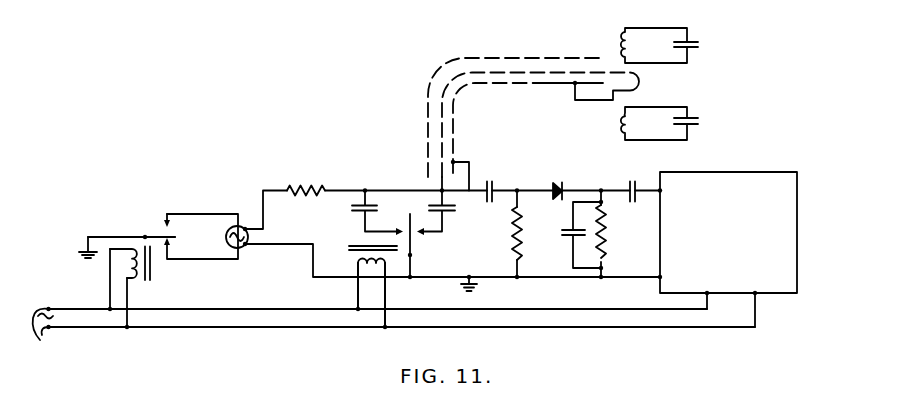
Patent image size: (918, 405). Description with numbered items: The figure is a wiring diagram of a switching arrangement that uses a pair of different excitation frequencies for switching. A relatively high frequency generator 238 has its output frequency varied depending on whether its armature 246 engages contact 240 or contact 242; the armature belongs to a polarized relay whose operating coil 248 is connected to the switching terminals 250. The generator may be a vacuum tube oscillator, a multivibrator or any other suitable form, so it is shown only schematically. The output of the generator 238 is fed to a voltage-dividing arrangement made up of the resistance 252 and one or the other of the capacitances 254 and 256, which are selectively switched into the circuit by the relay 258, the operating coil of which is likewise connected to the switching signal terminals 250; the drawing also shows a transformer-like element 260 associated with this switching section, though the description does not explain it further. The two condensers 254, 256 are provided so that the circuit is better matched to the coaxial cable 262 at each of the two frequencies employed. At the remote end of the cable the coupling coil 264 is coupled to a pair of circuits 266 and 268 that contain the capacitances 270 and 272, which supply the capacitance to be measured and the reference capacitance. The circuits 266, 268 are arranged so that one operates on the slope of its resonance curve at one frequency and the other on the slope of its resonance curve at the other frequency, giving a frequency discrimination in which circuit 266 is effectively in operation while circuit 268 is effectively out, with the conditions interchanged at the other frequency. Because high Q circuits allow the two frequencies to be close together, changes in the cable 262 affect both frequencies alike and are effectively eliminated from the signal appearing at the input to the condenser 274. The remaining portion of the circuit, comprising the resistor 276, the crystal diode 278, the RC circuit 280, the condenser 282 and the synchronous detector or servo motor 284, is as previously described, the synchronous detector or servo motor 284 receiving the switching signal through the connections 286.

The high frequency generator 238 is at (243, 248).
The contact 240 is at (167, 220).
The contact 242 is at (168, 250).
The armature 246 is at (143, 234).
The operating coil 248 is at (131, 264).
The switching terminals 250 is at (52, 335).
The resistance 252 is at (307, 184).
The capacitance 254 is at (352, 206).
The capacitance 256 is at (452, 214).
The relay 258 is at (418, 209).
The transformer 260 is at (357, 278).
The coaxial cable 262 is at (488, 86).
The coupling coil 264 is at (636, 85).
The circuit 266 is at (682, 32).
The circuit 268 is at (682, 133).
The capacitance 270 is at (693, 41).
The capacitance 272 is at (693, 121).
The condenser 274 is at (494, 181).
The resistor 276 is at (512, 222).
The crystal diode 278 is at (563, 182).
The RC circuit 280 is at (616, 225).
The condenser 282 is at (637, 181).
The synchronous detector or servo motor 284 is at (761, 172).
The connections 286 is at (523, 309).